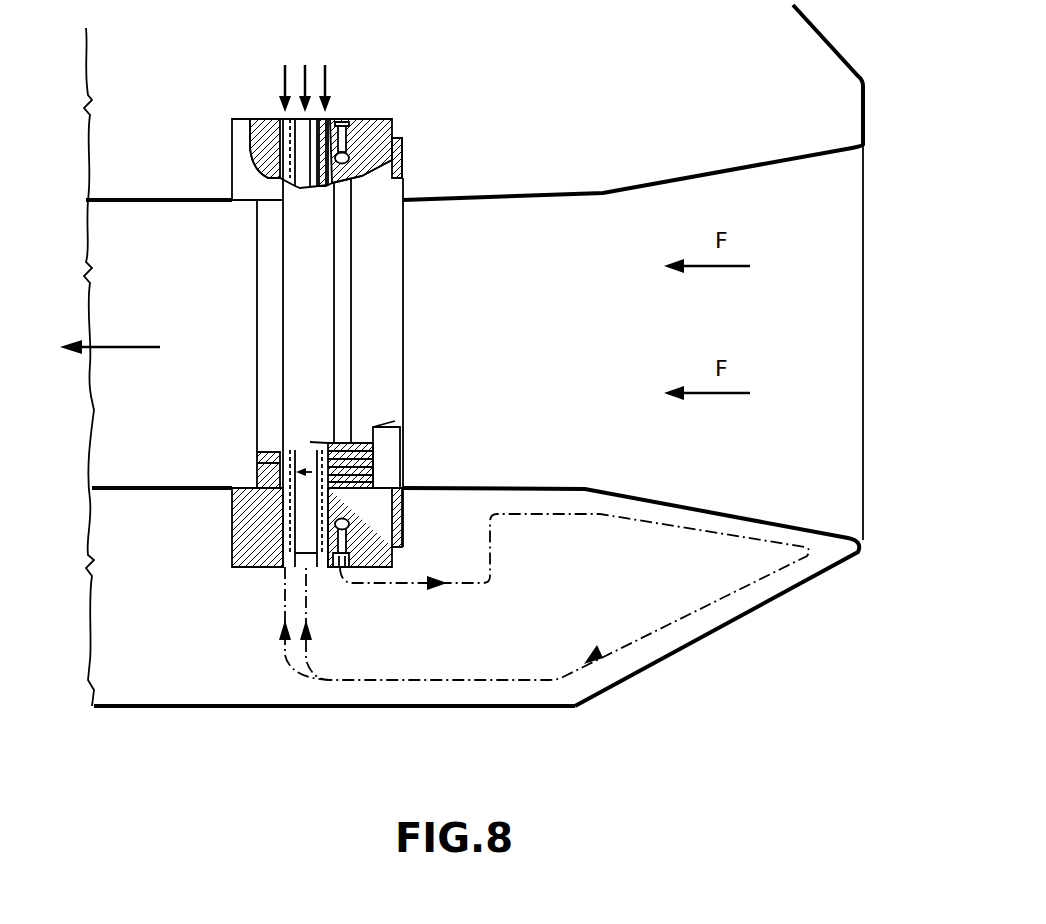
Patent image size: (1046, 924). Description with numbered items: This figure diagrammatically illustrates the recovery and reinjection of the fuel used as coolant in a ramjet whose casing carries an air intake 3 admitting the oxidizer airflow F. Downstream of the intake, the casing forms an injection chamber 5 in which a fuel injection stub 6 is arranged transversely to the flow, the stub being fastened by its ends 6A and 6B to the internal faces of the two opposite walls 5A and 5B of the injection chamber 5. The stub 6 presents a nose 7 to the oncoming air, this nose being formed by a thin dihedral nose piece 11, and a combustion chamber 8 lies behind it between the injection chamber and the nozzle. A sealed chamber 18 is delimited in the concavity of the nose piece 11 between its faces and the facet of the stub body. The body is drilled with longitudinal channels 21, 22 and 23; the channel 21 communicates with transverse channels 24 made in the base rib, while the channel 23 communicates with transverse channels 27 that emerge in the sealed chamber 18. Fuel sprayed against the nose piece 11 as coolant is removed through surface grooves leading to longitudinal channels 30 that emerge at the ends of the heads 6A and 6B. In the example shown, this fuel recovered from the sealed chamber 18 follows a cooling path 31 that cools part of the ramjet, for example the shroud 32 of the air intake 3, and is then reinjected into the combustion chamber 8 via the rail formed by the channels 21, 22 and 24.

The air intake 3 is at (865, 221).
The injection chamber 5 is at (160, 305).
The wall of the injection chamber 5A is at (157, 140).
The wall of the injection chamber 5B is at (198, 672).
The fuel injection stub 6 is at (142, 538).
The end of the injection stub 6A is at (248, 145).
The end of the injection stub 6B is at (246, 548).
The nose 7 is at (403, 280).
The combustion chamber 8 is at (99, 350).
The nose piece 11 is at (393, 382).
The sealed chamber 18 is at (388, 455).
The longitudinal channel 21 is at (283, 156).
The longitudinal channel 22 is at (328, 140).
The longitudinal channel 23 is at (402, 150).
The transverse channel 24 is at (270, 448).
The transverse channel 27 is at (400, 482).
The longitudinal channel 30 is at (348, 121).
The cooling path 31 is at (578, 516).
The shroud of the air intake 32 is at (742, 606).